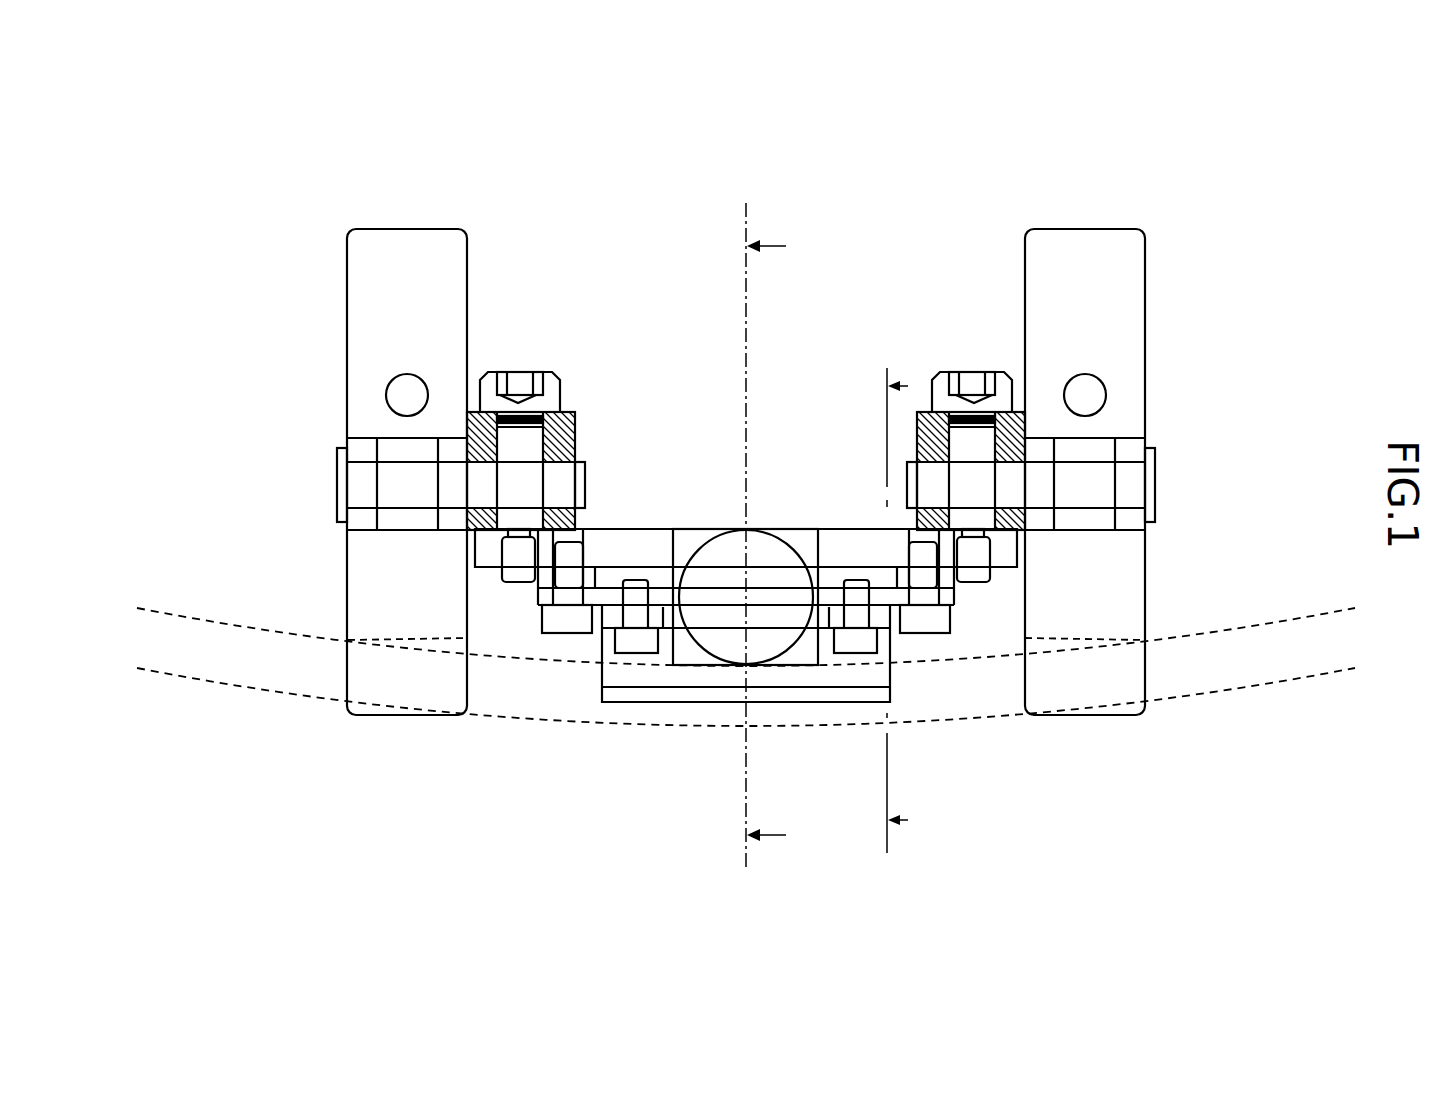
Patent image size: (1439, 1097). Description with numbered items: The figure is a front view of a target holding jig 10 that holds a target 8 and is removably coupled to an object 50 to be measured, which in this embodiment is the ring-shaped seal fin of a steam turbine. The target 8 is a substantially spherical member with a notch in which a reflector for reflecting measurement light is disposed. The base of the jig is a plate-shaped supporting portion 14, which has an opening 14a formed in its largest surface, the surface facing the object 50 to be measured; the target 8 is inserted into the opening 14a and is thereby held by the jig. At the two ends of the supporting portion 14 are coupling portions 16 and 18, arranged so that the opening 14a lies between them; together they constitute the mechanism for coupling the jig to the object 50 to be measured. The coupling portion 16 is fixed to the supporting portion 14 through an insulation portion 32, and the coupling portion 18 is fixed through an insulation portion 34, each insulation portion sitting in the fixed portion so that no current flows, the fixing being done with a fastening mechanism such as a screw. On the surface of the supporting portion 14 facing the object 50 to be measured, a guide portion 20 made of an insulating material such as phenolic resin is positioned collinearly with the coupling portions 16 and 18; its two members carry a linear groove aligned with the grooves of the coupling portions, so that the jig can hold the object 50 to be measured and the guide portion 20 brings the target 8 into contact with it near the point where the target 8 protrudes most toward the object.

The target holding jig 10 is at (1149, 197).
The target 8 is at (792, 540).
The supporting portion 14 is at (625, 540).
The opening 14a is at (687, 540).
The coupling portion 16 is at (1130, 268).
The coupling portion 18 is at (358, 268).
The guide portion 20 is at (653, 705).
The insulation portion 32 is at (1019, 412).
The insulation portion 34 is at (570, 412).
The object to be measured 50 is at (1245, 690).